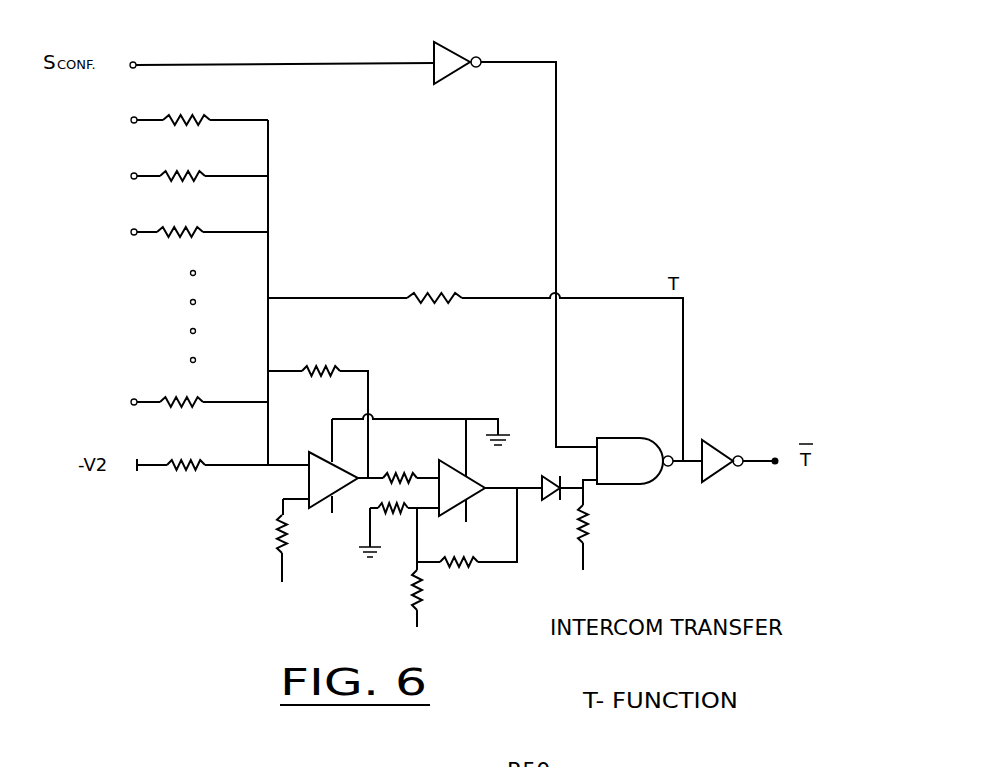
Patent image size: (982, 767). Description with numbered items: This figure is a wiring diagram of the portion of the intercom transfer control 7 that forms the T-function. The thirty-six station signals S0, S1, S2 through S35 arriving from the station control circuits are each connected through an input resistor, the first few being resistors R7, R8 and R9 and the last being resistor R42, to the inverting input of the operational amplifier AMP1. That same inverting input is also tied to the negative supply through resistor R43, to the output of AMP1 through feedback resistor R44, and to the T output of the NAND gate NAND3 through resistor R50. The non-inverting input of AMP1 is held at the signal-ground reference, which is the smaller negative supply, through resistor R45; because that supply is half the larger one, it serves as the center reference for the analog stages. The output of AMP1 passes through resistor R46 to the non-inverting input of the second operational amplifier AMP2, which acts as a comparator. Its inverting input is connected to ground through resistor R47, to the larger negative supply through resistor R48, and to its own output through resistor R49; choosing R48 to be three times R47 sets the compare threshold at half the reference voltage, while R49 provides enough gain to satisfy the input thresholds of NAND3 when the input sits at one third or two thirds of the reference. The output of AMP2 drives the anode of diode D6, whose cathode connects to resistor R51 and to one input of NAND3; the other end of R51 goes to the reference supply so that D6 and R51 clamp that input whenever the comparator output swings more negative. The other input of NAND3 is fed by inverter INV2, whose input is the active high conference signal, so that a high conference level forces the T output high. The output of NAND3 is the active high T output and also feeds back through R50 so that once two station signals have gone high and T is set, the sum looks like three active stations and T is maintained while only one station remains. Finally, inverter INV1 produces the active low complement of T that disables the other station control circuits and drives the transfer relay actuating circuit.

The intercom transfer control 7 is at (647, 665).
The resistor R7 is at (215, 106).
The resistor R8 is at (214, 165).
The resistor R9 is at (212, 221).
The resistor R42 is at (214, 390).
The resistor R43 is at (238, 452).
The resistor R44 is at (318, 409).
The resistor R45 is at (278, 555).
The resistor R46 is at (411, 466).
The resistor R47 is at (399, 530).
The resistor R48 is at (399, 582).
The resistor R49 is at (467, 543).
The resistor R50 is at (475, 364).
The resistor R51 is at (601, 542).
The diode D6 is at (567, 503).
The operational amplifier AMP1 is at (333, 479).
The operational amplifier AMP2 is at (462, 482).
The NAND gate NAND3 is at (649, 461).
The inverter INV1 is at (740, 451).
The inverter INV2 is at (508, 231).
The station signal S0 is at (123, 120).
The station signal S1 is at (122, 176).
The station signal S2 is at (120, 232).
The station signal S35 is at (122, 402).